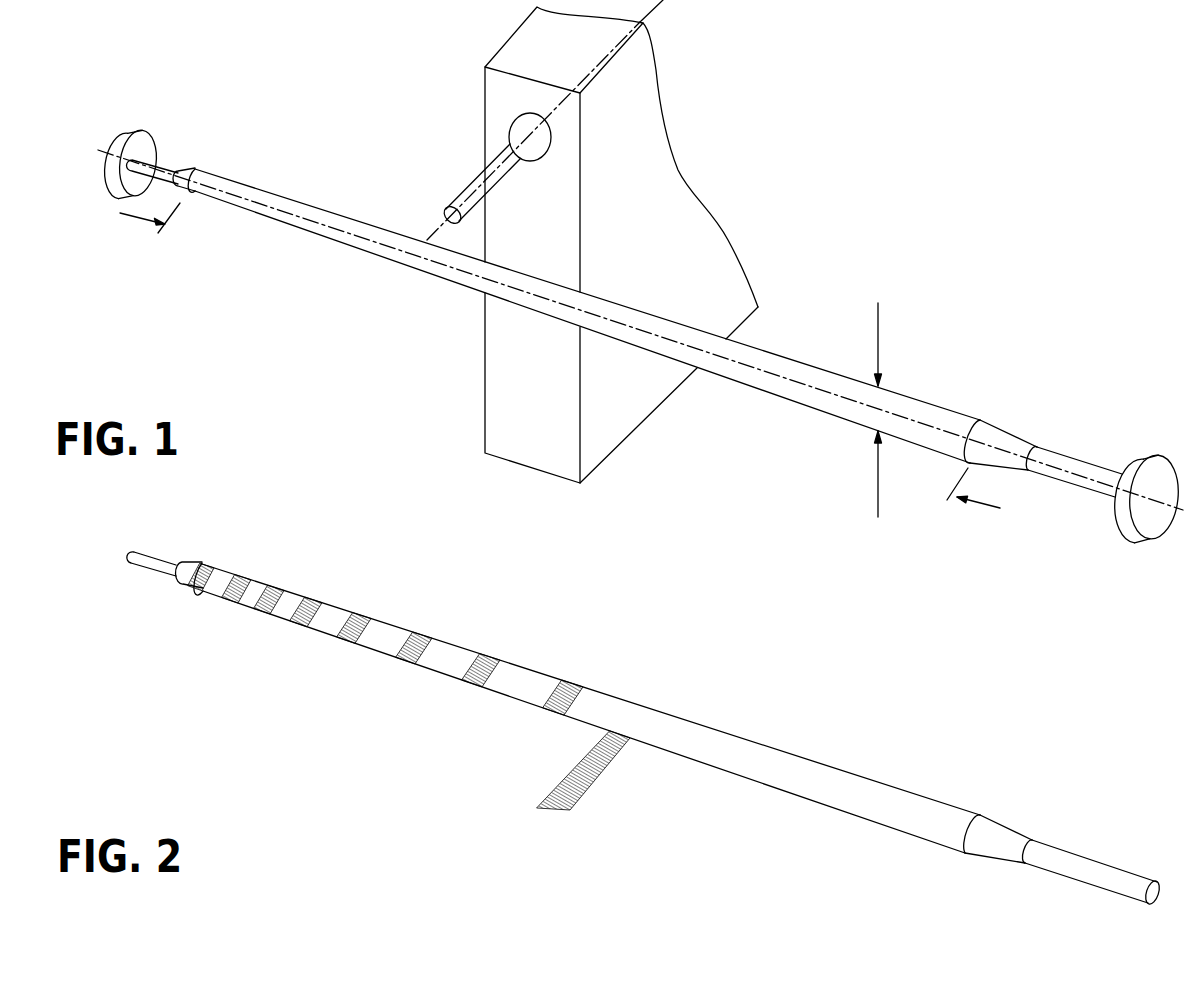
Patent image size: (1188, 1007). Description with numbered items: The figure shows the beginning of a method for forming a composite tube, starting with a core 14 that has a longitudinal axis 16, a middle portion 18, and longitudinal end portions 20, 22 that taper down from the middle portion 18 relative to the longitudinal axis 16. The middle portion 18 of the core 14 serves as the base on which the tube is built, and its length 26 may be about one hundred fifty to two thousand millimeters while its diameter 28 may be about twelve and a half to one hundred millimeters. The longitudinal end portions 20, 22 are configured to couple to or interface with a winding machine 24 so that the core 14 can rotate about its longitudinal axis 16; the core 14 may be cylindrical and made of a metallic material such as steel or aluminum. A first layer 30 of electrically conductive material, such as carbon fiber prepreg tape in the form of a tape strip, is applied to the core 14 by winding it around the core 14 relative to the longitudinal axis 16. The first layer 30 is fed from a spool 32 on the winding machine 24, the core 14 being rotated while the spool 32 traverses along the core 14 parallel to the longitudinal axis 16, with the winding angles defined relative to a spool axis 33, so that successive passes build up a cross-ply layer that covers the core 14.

In FIG. 1, the core 14 is at (247, 177).
In FIG. 2, the core 14 is at (243, 577).
In FIG. 1, the longitudinal axis 16 is at (1172, 513).
In FIG. 1, the middle portion 18 is at (647, 311).
In FIG. 2, the middle portion 18 is at (637, 700).
In FIG. 1, the longitudinal end portion 20 is at (165, 168).
In FIG. 2, the longitudinal end portion 20 is at (173, 566).
In FIG. 1, the longitudinal end portion 22 is at (1067, 453).
In FIG. 2, the longitudinal end portion 22 is at (1072, 855).
In FIG. 1, the winding machine 24 is at (122, 147).
In FIG. 1, the length 26 is at (977, 507).
In FIG. 1, the diameter 28 is at (880, 340).
In FIG. 2, the first layer 30 is at (480, 683).
In FIG. 1, the spool 32 is at (443, 208).
In FIG. 1, the spool axis 33 is at (647, 15).